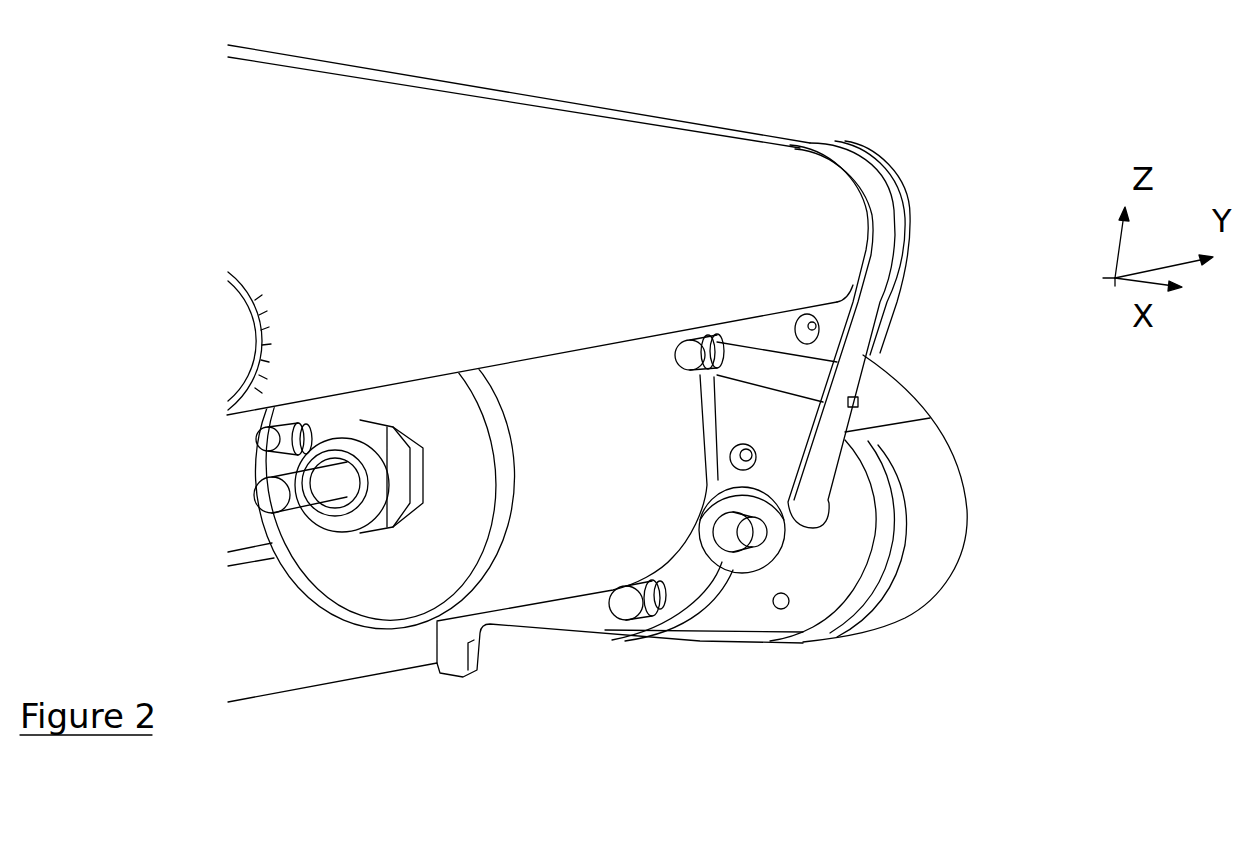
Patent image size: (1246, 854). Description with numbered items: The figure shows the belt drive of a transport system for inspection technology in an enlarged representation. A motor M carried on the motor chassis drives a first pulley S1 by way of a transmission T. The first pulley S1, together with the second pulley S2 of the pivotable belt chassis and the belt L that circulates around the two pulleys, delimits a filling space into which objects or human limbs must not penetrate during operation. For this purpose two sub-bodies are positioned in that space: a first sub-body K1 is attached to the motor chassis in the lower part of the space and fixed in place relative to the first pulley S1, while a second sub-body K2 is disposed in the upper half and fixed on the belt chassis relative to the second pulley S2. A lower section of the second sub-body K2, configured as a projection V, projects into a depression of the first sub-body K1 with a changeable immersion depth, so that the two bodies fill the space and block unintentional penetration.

The second pulley S2 is at (897, 175).
The belt L is at (850, 379).
The projection V is at (790, 380).
The transmission T is at (913, 585).
The first pulley S1 is at (752, 560).
The first sub-body K1 is at (668, 481).
The second sub-body K2 is at (770, 335).
The motor M is at (397, 579).